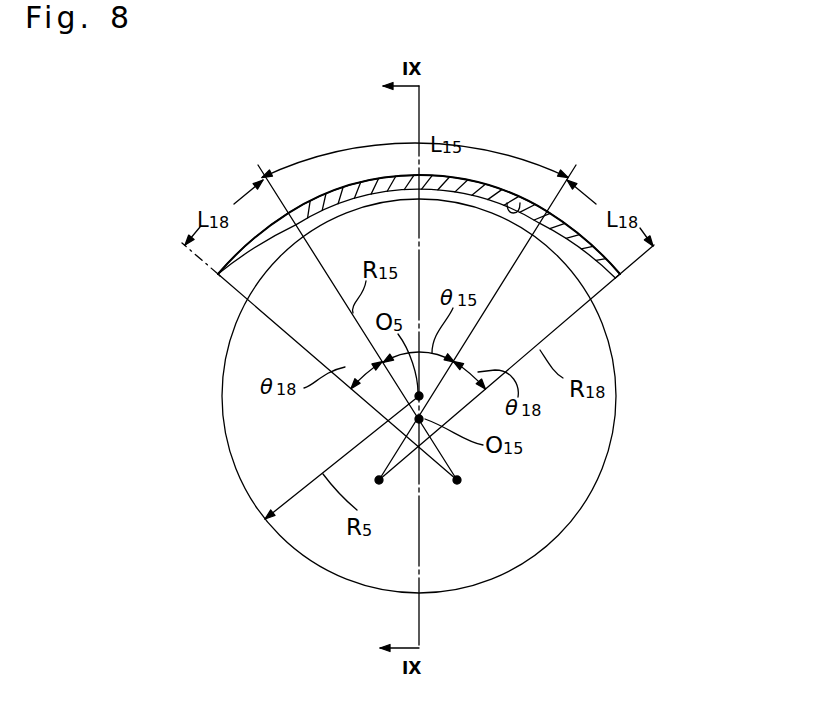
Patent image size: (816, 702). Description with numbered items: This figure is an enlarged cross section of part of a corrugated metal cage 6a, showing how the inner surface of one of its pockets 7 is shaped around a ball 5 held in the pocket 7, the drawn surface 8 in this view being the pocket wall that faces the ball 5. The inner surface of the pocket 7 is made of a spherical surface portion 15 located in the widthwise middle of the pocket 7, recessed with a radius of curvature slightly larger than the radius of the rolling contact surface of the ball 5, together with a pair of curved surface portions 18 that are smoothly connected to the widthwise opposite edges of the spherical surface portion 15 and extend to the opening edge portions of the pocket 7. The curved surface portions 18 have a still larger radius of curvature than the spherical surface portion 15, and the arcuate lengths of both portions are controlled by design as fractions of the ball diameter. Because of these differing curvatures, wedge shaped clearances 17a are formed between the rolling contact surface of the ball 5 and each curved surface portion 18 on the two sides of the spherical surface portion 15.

The ball 5 is at (535, 492).
The cage 6a is at (368, 165).
The pocket 7 is at (525, 208).
The sliding surface portion 8 is at (334, 201).
The spherical surface portion 15 is at (457, 190).
The wedge shaped clearance 17a is at (246, 283).
The curved surface portion 18 is at (258, 256).